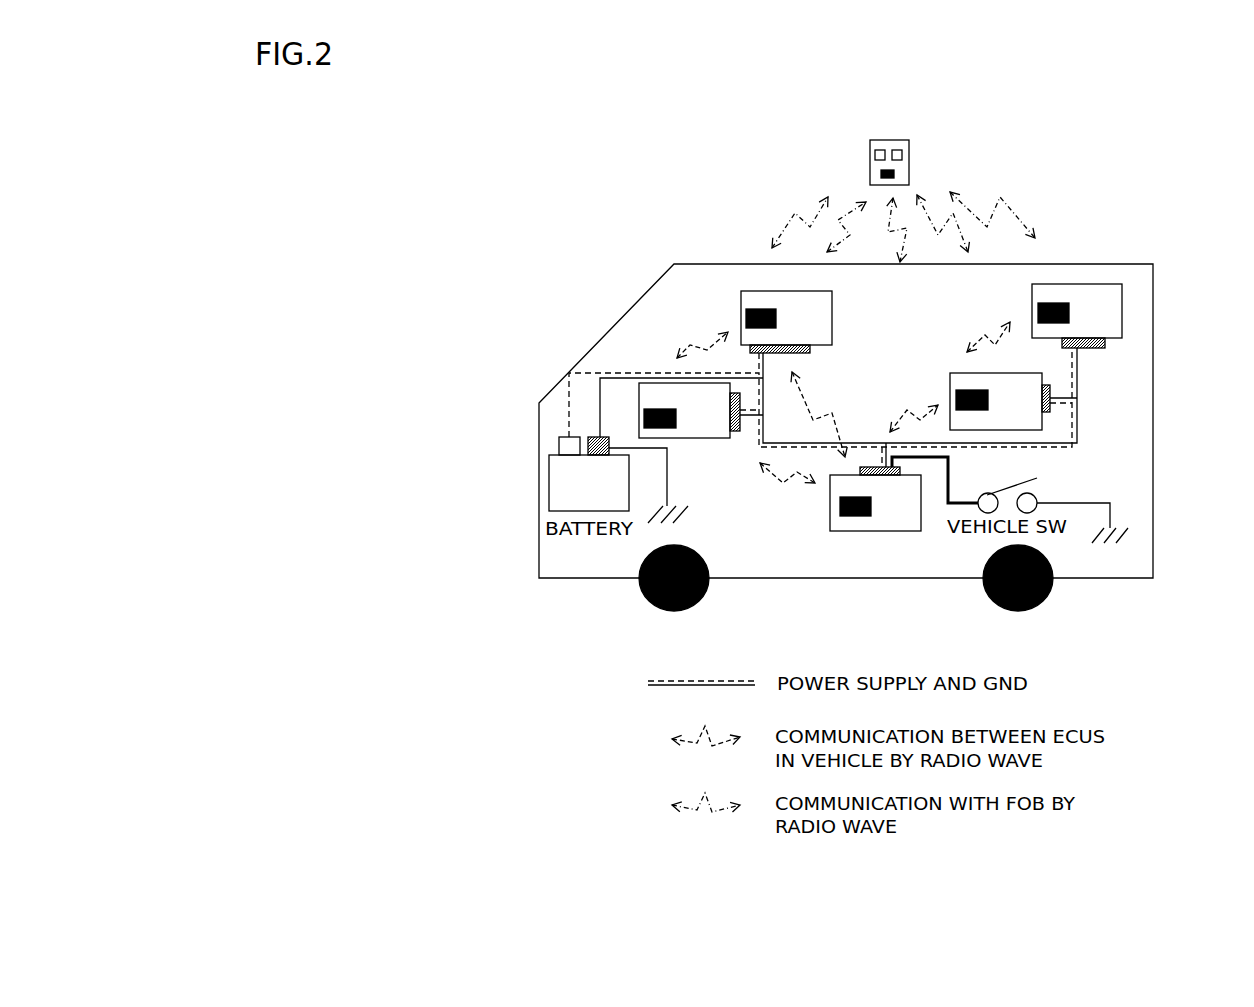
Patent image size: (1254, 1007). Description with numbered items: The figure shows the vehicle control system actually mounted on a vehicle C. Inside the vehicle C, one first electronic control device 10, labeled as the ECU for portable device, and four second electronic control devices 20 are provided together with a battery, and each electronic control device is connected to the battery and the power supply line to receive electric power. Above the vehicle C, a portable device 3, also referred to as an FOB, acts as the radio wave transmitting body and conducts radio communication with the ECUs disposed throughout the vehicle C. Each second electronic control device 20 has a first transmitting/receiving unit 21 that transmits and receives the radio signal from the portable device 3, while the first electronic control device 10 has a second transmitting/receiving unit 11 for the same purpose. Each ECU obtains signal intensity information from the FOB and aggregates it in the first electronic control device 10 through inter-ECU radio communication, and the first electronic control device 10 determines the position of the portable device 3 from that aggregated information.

The portable device 3 is at (870, 162).
The second electronic control device 20 is at (742, 293).
The first transmitting/receiving unit 21 is at (746, 312).
The first electronic control device 10 is at (896, 531).
The second transmitting/receiving unit 11 is at (857, 517).
The vehicle C is at (1153, 277).